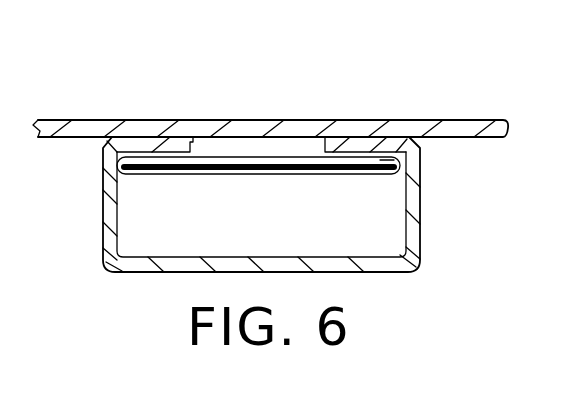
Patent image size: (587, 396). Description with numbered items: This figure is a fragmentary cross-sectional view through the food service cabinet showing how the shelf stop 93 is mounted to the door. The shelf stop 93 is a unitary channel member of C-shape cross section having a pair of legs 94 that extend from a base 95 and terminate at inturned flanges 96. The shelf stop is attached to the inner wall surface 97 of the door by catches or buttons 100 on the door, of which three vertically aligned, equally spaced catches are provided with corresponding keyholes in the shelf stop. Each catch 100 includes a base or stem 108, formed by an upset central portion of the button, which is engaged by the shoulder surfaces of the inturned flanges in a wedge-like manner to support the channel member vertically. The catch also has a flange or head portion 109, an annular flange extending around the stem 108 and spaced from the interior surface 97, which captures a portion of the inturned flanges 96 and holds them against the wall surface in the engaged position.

The shelf stop 93 is at (139, 272).
The legs 94 is at (101, 213).
The base 95 is at (382, 273).
The inturned flanges 96 is at (149, 146).
The inner wall surface 97 is at (481, 139).
The catches 100 is at (207, 178).
The base or stem 108 is at (246, 146).
The flange or head portion 109 is at (386, 176).